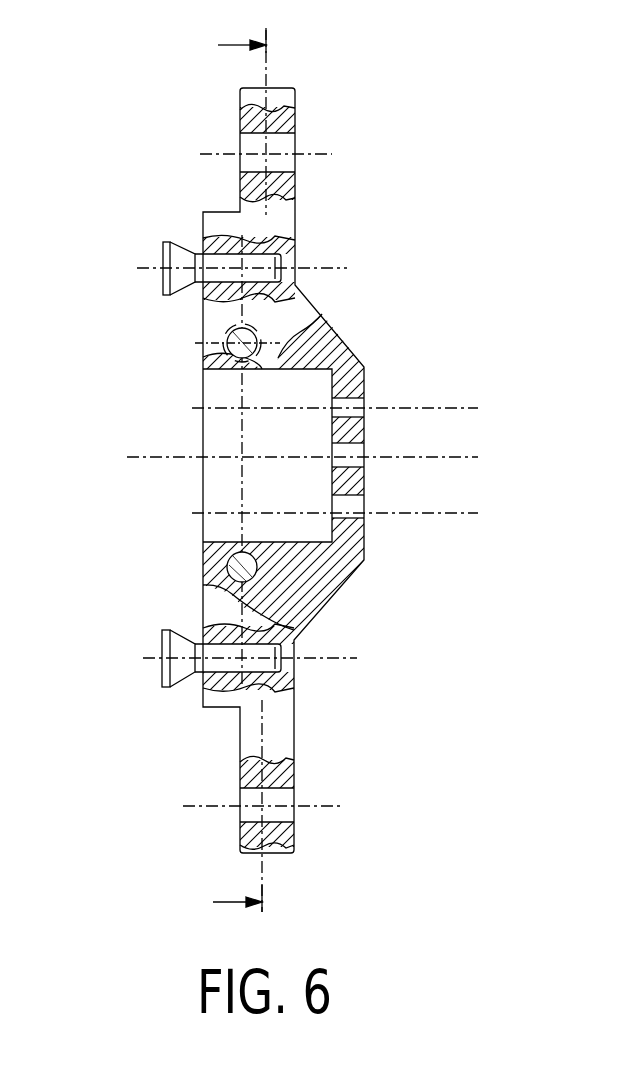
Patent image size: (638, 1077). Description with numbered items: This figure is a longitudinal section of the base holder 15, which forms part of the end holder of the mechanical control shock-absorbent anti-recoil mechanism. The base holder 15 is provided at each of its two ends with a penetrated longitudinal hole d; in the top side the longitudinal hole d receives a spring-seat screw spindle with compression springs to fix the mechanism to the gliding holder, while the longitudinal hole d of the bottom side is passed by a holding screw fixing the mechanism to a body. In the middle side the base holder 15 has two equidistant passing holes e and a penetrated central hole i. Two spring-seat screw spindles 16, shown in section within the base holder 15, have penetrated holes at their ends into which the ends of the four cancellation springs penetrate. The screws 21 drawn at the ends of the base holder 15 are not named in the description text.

The base holder 15 is at (283, 222).
The spring-seat screw spindle 16 is at (225, 338).
The countersunk screw 21 is at (180, 257).
The longitudinal hole d is at (253, 146).
The passing hole e is at (357, 403).
The central hole i is at (357, 450).